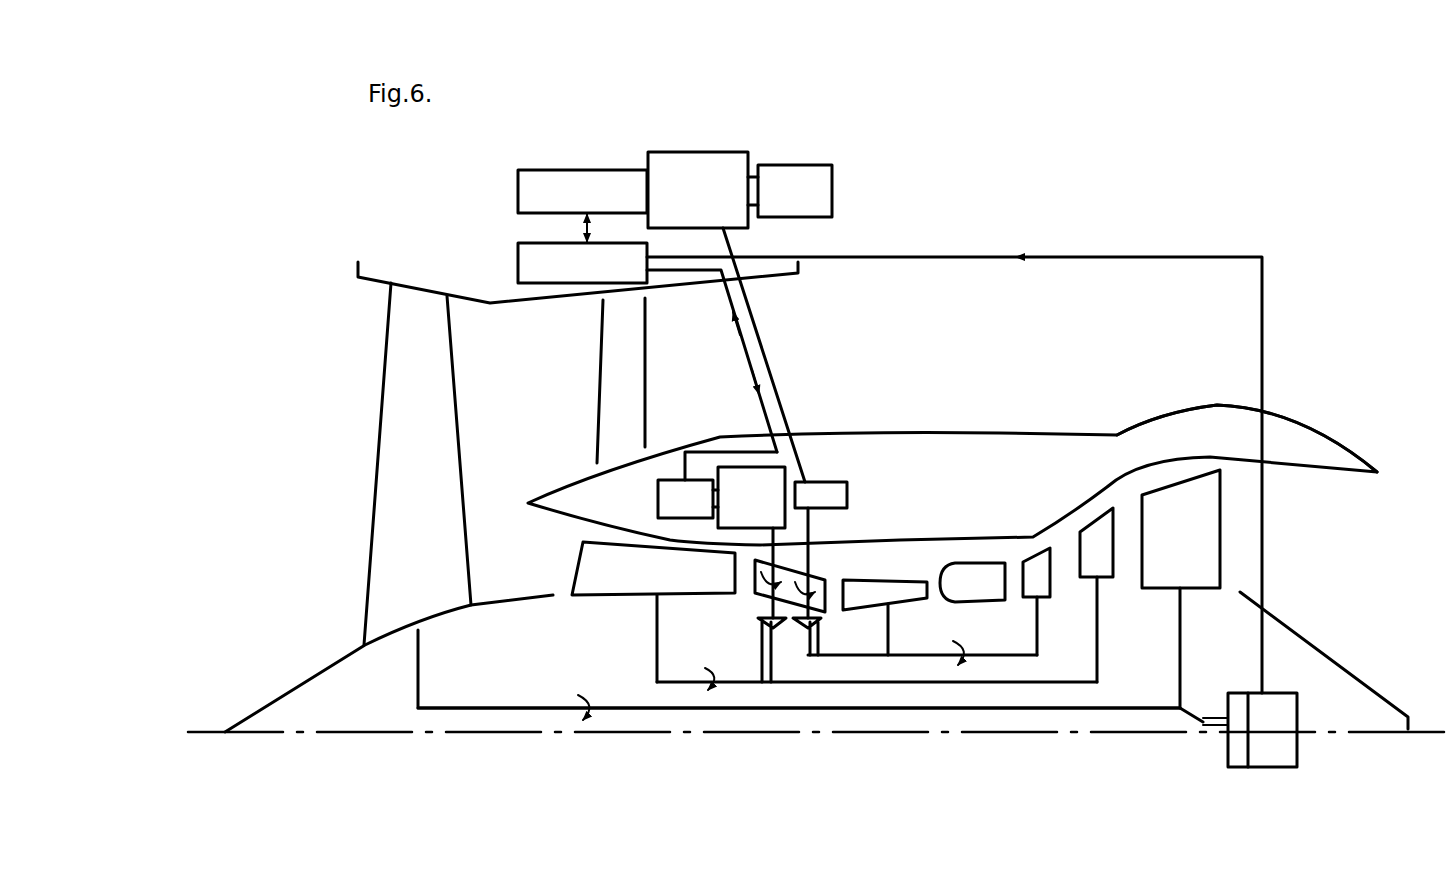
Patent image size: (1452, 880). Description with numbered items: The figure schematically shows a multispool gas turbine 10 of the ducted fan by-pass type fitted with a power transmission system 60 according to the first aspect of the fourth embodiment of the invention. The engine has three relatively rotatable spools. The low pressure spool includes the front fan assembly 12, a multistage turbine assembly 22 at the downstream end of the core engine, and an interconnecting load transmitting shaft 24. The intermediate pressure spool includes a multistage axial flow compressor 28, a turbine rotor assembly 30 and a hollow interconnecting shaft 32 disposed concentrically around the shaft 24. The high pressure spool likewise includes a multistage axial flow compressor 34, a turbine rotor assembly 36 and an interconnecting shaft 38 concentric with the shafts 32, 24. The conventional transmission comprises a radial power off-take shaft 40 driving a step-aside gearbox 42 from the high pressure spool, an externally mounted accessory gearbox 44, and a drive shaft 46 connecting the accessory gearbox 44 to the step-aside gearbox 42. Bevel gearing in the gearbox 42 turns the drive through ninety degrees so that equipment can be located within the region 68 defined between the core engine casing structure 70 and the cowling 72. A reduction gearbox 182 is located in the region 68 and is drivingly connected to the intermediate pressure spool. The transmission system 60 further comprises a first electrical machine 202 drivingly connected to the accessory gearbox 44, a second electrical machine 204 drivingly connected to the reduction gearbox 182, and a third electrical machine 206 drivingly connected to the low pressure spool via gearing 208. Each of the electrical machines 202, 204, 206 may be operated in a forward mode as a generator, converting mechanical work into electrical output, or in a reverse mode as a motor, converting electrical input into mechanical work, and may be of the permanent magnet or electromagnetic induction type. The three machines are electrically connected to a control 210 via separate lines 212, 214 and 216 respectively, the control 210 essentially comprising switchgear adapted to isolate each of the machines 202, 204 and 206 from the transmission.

The multispool gas turbine 10 is at (990, 198).
The front fan assembly 12 is at (391, 557).
The multistage turbine assembly 22 is at (1200, 580).
The interconnecting load transmitting shaft 24 is at (502, 707).
The multistage axial flow compressor 28 is at (630, 582).
The turbine rotor assembly 30 is at (1108, 568).
The hollow interconnecting shaft 32 is at (792, 685).
The multistage axial flow compressor 34 is at (900, 575).
The turbine rotor assembly 36 is at (1043, 578).
The interconnecting shaft 38 is at (925, 657).
The radial power off-take shaft 40 is at (830, 548).
The step-aside gearbox 42 is at (838, 490).
The accessory gearbox 44 is at (708, 168).
The drive shaft 46 is at (773, 380).
The power transmission system 60 is at (836, 153).
The region 68 is at (952, 475).
The core engine casing structure 70 is at (1133, 478).
The cowling 72 is at (1117, 430).
The reduction gearbox 182 is at (727, 531).
The first electrical machine 202 is at (545, 190).
The second electrical machine 204 is at (658, 495).
The third electrical machine 206 is at (1283, 715).
The gearing 208 is at (1235, 748).
The control 210 is at (530, 265).
The line 212 is at (580, 228).
The line 214 is at (743, 348).
The line 216 is at (1265, 575).